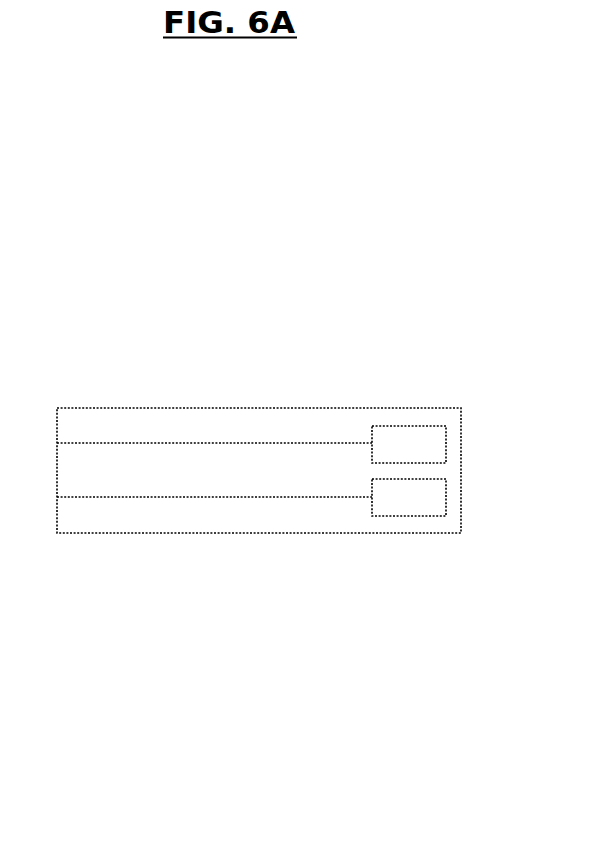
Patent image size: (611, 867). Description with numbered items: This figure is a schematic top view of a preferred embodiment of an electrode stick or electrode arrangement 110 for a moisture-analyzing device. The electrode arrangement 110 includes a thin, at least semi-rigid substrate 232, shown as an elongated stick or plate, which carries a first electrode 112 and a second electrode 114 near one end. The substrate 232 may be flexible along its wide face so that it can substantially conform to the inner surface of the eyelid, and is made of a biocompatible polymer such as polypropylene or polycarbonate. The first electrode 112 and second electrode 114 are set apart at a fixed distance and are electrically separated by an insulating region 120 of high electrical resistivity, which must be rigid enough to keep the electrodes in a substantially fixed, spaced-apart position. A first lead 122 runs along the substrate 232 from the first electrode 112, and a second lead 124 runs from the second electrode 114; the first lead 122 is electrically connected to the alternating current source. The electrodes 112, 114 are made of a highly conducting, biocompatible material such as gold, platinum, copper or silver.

The electrode arrangement 110 is at (326, 486).
The substrate 232 is at (232, 408).
The first lead 122 is at (303, 443).
The second lead 124 is at (237, 497).
The first electrode 112 is at (409, 426).
The second electrode 114 is at (410, 517).
The insulating region 120 is at (427, 472).